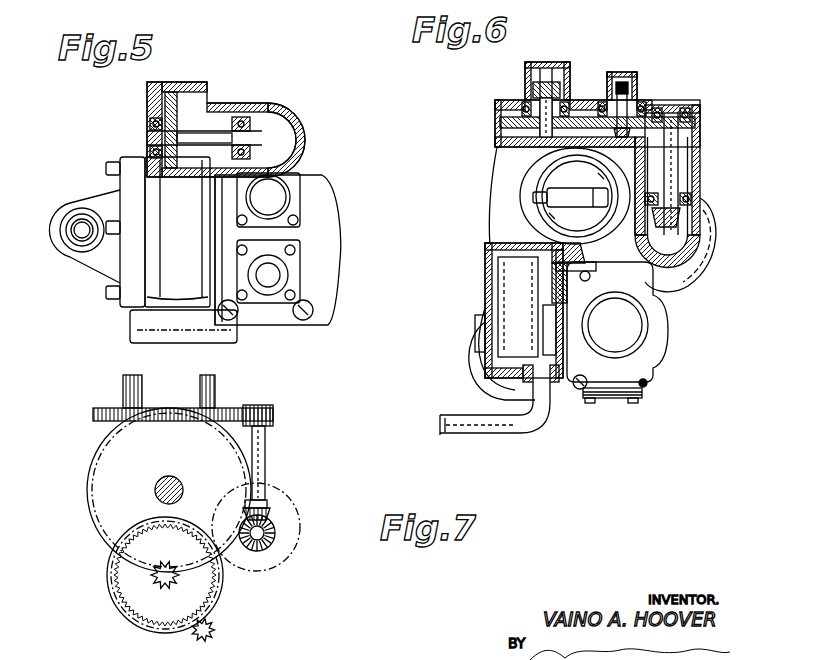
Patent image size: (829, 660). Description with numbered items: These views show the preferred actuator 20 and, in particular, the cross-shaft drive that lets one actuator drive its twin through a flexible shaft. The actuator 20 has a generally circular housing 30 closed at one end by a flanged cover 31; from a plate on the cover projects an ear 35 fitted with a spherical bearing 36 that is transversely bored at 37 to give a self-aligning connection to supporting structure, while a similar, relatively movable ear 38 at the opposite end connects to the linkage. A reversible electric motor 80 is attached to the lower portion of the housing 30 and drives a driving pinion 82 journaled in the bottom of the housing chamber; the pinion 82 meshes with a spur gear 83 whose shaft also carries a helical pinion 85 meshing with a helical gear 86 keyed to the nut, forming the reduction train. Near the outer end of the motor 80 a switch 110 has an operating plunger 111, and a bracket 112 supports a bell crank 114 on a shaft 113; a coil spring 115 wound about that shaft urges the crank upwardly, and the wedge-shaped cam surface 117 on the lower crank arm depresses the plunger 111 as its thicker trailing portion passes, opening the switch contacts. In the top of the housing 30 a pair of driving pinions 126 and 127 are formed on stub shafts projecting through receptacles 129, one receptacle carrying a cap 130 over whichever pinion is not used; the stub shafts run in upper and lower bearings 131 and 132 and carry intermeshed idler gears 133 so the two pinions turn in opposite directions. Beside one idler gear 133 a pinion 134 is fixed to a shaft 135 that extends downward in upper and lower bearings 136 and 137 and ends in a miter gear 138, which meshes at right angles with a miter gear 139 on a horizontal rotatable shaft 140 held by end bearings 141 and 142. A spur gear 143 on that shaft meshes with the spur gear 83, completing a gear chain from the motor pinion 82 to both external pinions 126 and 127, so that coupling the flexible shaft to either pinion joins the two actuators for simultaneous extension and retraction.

In FIG. 5, the actuator 20 is at (307, 153).
In FIG. 6, the actuator 20 is at (655, 375).
In FIG. 5, the housing 30 is at (167, 283).
In FIG. 6, the housing 30 is at (497, 165).
In FIG. 5, the flanged cover 31 is at (127, 265).
In FIG. 5, the ear 35 is at (97, 197).
In FIG. 5, the spherical bearing 36 is at (77, 228).
In FIG. 5, the transverse bore 37 is at (73, 240).
In FIG. 6, the ear 38 is at (532, 194).
In FIG. 5, the reversible electric motor 80 is at (332, 262).
In FIG. 7, the driving pinion 82 is at (204, 636).
In FIG. 7, the spur gear 83 is at (137, 612).
In FIG. 7, the helical pinion 85 is at (157, 577).
In FIG. 7, the helical gear 86 is at (100, 515).
In FIG. 6, the switch 110 is at (508, 293).
In FIG. 6, the operating plunger 111 is at (530, 307).
In FIG. 6, the bracket 112 is at (590, 274).
In FIG. 6, the shaft 113 is at (497, 240).
In FIG. 6, the bell crank 114 is at (577, 245).
In FIG. 6, the coil spring 115 is at (600, 296).
In FIG. 6, the wedge-shaped cam surface 117 is at (512, 288).
In FIG. 7, the driving pinion 126 is at (220, 392).
In FIG. 6, the driving pinion 126 is at (637, 85).
In FIG. 7, the driving pinion 127 is at (142, 393).
In FIG. 6, the driving pinion 127 is at (525, 89).
In FIG. 5, the receptacle 129 is at (300, 228).
In FIG. 6, the receptacle 129 is at (568, 73).
In FIG. 5, the cap 130 is at (290, 184).
In FIG. 6, the cap 130 is at (543, 62).
In FIG. 6, the upper bearing 131 is at (495, 101).
In FIG. 6, the lower bearing 132 is at (500, 138).
In FIG. 7, the idler gear 133 is at (95, 421).
In FIG. 6, the idler gear 133 is at (500, 120).
In FIG. 7, the pinion 134 is at (275, 423).
In FIG. 6, the pinion 134 is at (690, 130).
In FIG. 7, the shaft 135 is at (263, 470).
In FIG. 6, the shaft 135 is at (680, 185).
In FIG. 6, the upper bearing 136 is at (700, 112).
In FIG. 6, the lower bearing 137 is at (700, 210).
In FIG. 7, the miter gear 138 is at (277, 510).
In FIG. 6, the miter gear 138 is at (702, 233).
In FIG. 5, the miter gear 139 is at (268, 108).
In FIG. 7, the miter gear 139 is at (272, 540).
In FIG. 5, the rotatable shaft 140 is at (236, 117).
In FIG. 7, the rotatable shaft 140 is at (262, 530).
In FIG. 5, the end bearing 141 is at (243, 122).
In FIG. 5, the end bearing 142 is at (150, 122).
In FIG. 5, the spur gear 143 is at (186, 85).
In FIG. 7, the spur gear 143 is at (275, 568).